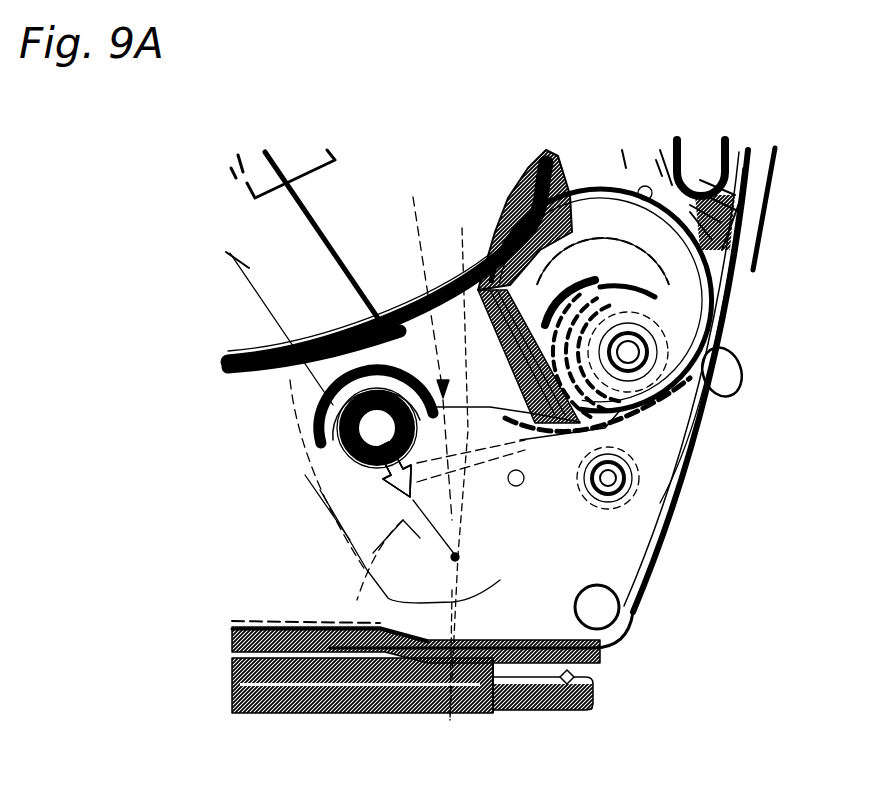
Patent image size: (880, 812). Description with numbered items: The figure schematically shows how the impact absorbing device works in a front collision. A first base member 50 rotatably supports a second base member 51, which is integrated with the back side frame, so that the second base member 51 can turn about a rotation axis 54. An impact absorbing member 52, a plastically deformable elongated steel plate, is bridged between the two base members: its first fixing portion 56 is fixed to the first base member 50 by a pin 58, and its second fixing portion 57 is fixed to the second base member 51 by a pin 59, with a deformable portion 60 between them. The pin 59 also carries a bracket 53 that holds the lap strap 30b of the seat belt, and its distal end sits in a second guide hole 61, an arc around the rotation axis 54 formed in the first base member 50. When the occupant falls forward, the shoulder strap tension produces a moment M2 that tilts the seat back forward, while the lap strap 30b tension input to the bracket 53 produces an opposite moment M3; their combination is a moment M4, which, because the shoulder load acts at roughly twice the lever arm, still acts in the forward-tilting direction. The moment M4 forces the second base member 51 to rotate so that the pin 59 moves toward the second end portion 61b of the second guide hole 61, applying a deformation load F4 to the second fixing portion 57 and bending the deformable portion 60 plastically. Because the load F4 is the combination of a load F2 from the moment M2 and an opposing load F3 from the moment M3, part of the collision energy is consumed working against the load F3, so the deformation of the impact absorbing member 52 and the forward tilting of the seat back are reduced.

The lap strap 30b is at (236, 265).
The first base member 50 is at (586, 536).
The second base member 51 is at (716, 396).
The impact absorbing member 52 is at (426, 343).
The bracket 53 is at (330, 387).
The rotation axis 54 is at (740, 375).
The first fixing portion 56 is at (700, 502).
The second fixing portion 57 is at (377, 348).
The pin 58 is at (626, 482).
The pin 59 is at (408, 398).
The deformable portion 60 is at (465, 458).
The second guide hole 61 is at (333, 723).
The second end portion 61b is at (450, 723).
The load F2 is at (410, 490).
The load F3 is at (330, 437).
The deformation load F4 is at (385, 478).
The moment M2 is at (640, 283).
The moment M3 is at (648, 413).
The moment M4 is at (652, 303).